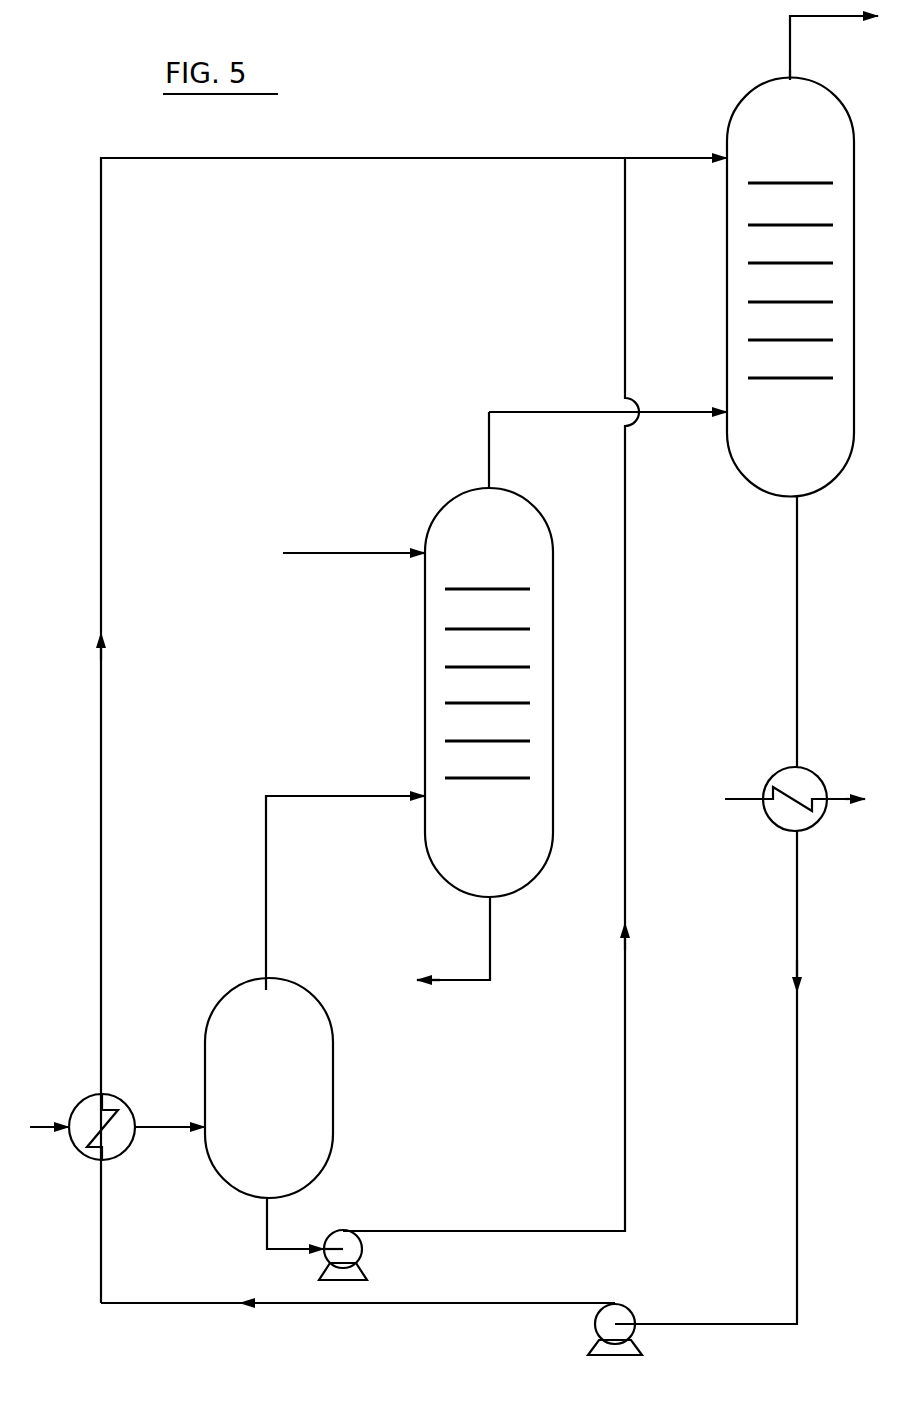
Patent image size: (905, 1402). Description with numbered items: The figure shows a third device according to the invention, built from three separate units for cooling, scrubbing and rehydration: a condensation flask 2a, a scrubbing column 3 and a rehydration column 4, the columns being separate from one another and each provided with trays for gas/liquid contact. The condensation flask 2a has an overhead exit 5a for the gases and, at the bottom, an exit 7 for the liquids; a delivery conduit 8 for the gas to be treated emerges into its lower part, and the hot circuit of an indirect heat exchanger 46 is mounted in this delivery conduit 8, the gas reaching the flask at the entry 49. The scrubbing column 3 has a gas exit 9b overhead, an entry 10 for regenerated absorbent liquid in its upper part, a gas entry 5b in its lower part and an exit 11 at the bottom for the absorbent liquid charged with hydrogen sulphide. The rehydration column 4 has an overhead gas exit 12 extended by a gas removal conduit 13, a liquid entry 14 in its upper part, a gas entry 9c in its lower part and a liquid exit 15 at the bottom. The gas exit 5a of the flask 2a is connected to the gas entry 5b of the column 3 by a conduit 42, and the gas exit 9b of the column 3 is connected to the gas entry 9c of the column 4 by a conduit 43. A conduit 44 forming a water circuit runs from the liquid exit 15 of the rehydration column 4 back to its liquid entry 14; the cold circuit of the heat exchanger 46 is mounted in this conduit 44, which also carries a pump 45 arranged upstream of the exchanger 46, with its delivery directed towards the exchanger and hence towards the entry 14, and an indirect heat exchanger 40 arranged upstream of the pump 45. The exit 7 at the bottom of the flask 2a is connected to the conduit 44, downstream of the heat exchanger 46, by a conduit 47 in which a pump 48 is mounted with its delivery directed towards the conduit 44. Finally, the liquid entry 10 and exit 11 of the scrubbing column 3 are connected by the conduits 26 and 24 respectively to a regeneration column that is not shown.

The condensation flask 2a is at (333, 1093).
The scrubbing column 3 is at (425, 660).
The rehydration column 4 is at (748, 288).
The overhead exit 5a is at (266, 978).
The gas entry 5b is at (425, 795).
The exit for the liquids 7 is at (267, 1200).
The delivery conduit 8 is at (66, 1127).
The gas exit 9b is at (489, 487).
The gas entry 9c is at (727, 418).
The entry for the regenerated absorbent liquid 10 is at (425, 558).
The exit for the absorbent liquid 11 is at (492, 900).
The overhead gas exit 12 is at (795, 78).
The gas removal conduit 13 is at (790, 60).
The liquid entry 14 is at (720, 150).
The liquid exit 15 is at (799, 500).
The conduit 24 is at (465, 980).
The conduit 26 is at (318, 553).
The indirect heat exchanger 40 is at (800, 770).
The conduit 42 is at (310, 796).
The conduit 43 is at (575, 410).
The conduit 44 is at (105, 452).
The pump 45 is at (618, 1304).
The indirect heat exchanger 46 is at (122, 1106).
The conduit 47 is at (626, 805).
The pump 48 is at (345, 1230).
The inlet of vessel 2a 49 is at (205, 1130).